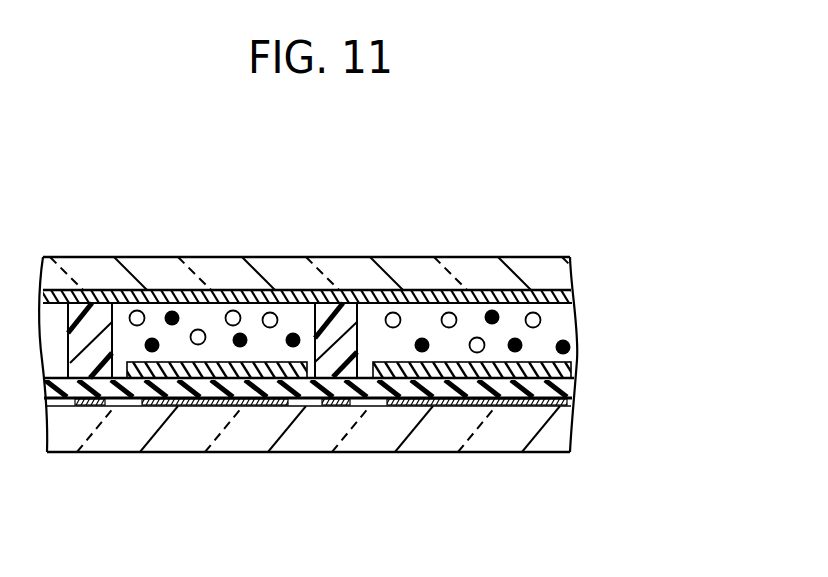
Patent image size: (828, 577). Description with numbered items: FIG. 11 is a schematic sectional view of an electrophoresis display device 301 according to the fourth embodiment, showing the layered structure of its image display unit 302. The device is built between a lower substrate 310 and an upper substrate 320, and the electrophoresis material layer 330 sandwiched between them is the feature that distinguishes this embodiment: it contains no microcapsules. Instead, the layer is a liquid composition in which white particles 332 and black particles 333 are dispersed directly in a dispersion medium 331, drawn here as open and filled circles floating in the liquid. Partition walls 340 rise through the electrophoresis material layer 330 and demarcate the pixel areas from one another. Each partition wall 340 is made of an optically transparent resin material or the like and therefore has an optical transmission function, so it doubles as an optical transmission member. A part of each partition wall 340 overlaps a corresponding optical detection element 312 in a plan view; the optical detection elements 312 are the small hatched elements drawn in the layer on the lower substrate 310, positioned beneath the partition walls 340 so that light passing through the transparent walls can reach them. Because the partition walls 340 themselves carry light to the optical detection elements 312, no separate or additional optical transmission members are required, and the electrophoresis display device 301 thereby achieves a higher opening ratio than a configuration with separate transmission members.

The electrophoresis display device 301 is at (75, 143).
The image display unit 302 is at (567, 175).
The first substrate 310 is at (575, 422).
The optical detection element 312 is at (95, 407).
The second substrate 320 is at (574, 271).
The electrophoresis material layer 330 is at (580, 336).
The dispersion medium 331 is at (433, 312).
The white particles 332 is at (393, 312).
The black particles 333 is at (172, 311).
The partition walls 340 is at (341, 367).